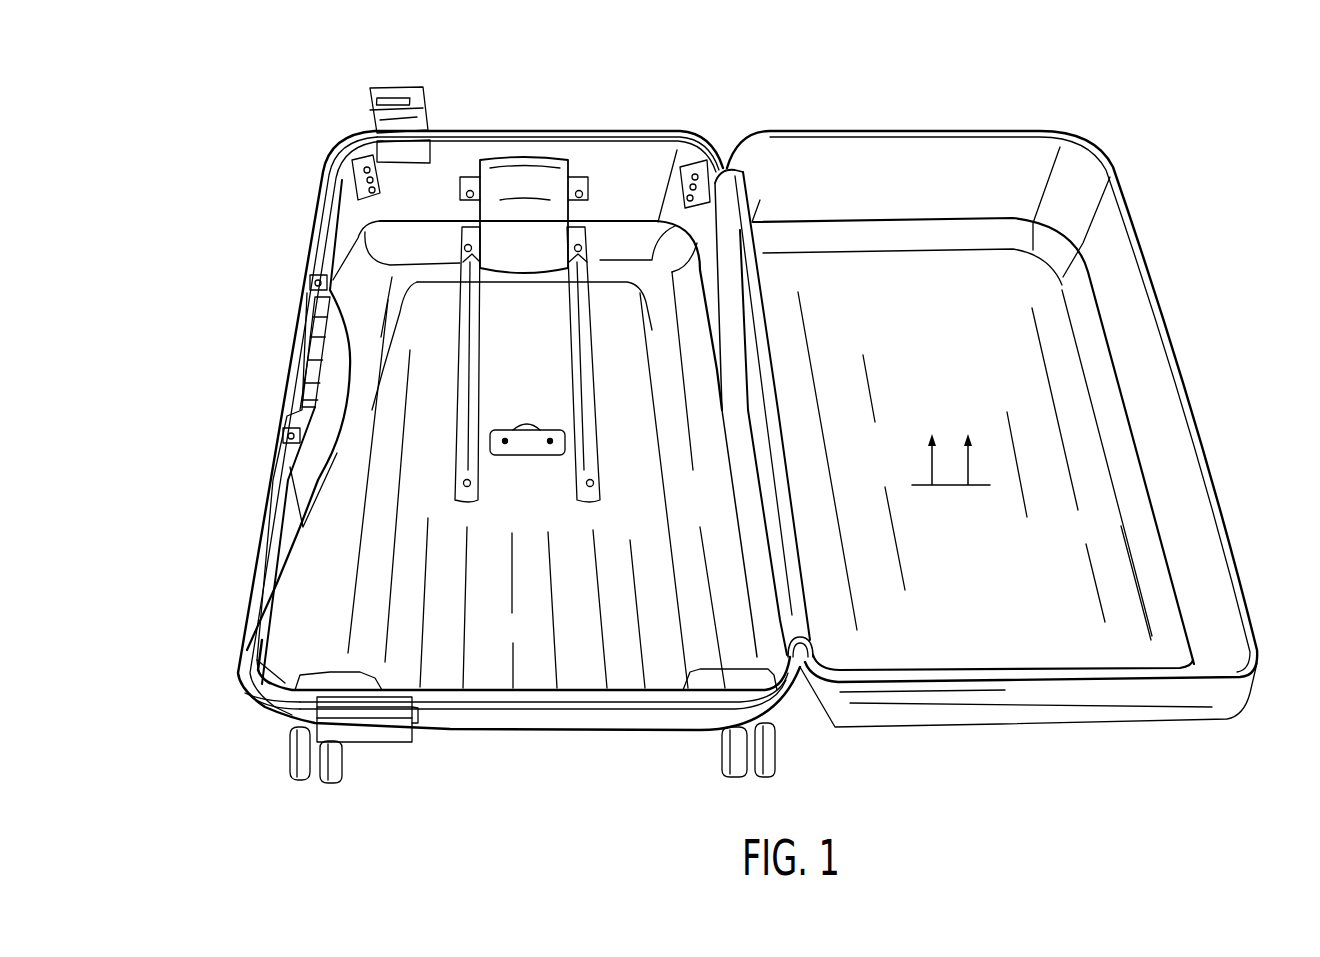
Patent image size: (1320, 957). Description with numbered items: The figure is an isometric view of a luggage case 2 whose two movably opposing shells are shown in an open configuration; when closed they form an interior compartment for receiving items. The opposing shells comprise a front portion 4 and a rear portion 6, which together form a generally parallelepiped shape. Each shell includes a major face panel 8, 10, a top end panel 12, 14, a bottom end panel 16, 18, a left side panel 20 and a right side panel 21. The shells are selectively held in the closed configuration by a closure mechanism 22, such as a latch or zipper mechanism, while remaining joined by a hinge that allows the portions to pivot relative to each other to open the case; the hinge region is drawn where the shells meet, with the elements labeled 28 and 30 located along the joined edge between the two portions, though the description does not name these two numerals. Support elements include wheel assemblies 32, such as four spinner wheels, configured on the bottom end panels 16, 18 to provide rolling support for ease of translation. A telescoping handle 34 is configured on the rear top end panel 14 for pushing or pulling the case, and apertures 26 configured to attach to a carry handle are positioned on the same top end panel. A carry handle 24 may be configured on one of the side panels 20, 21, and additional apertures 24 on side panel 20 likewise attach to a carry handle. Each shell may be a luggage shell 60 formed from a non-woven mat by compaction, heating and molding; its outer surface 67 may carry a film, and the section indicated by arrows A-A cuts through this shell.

The luggage case 2 is at (1160, 126).
The front portion 4 is at (1127, 303).
The rear portion 6 is at (257, 556).
The major face panel 8 is at (1088, 430).
The major face panel 10 is at (372, 578).
The top end panel 12 is at (985, 153).
The top end panel 14 is at (618, 177).
The bottom end panel 16 is at (1032, 679).
The bottom end panel 18 is at (541, 690).
The left side panel 20 is at (290, 507).
The right side panel 21 is at (1186, 510).
The closure mechanism 22 is at (302, 363).
The carry handle 24 is at (310, 280).
The apertures 26 is at (579, 195).
The hinge panel 28 is at (710, 338).
The hinge 30 is at (770, 347).
The wheel assemblies 32 is at (330, 787).
The telescoping handle 34 is at (590, 395).
The luggage shell 60 is at (250, 590).
The outer surface 67 is at (1144, 694).